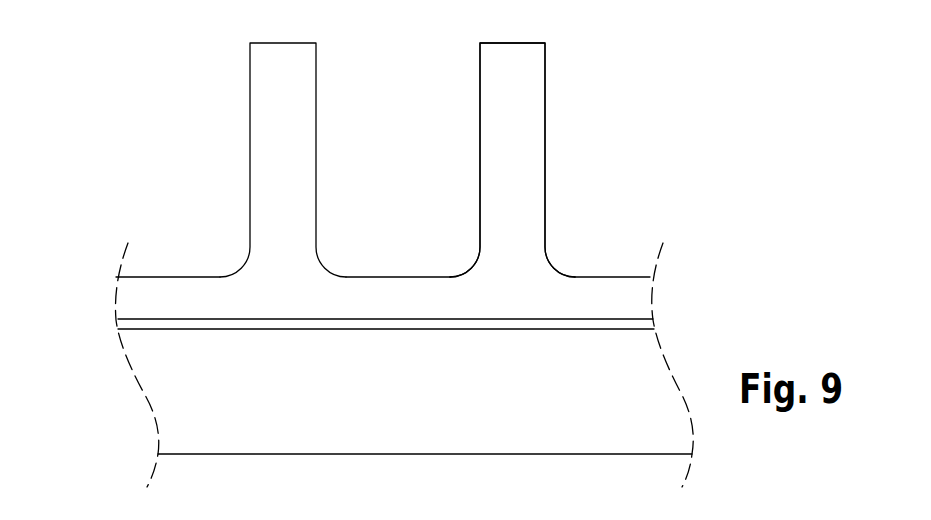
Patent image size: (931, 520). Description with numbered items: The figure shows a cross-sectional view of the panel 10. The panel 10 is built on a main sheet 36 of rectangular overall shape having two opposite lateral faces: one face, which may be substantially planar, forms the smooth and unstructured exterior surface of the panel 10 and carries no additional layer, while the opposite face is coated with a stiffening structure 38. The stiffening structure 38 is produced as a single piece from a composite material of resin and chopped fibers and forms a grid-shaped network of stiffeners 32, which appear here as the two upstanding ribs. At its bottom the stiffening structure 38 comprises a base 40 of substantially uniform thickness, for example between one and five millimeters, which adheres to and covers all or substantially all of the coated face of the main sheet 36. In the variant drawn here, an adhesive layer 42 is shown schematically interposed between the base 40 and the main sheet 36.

The panel 10 is at (157, 106).
The stiffeners 32 is at (518, 133).
The stiffening structure 38 is at (590, 190).
The base 40 is at (622, 300).
The adhesive layer 42 is at (135, 323).
The main sheet 36 is at (607, 377).